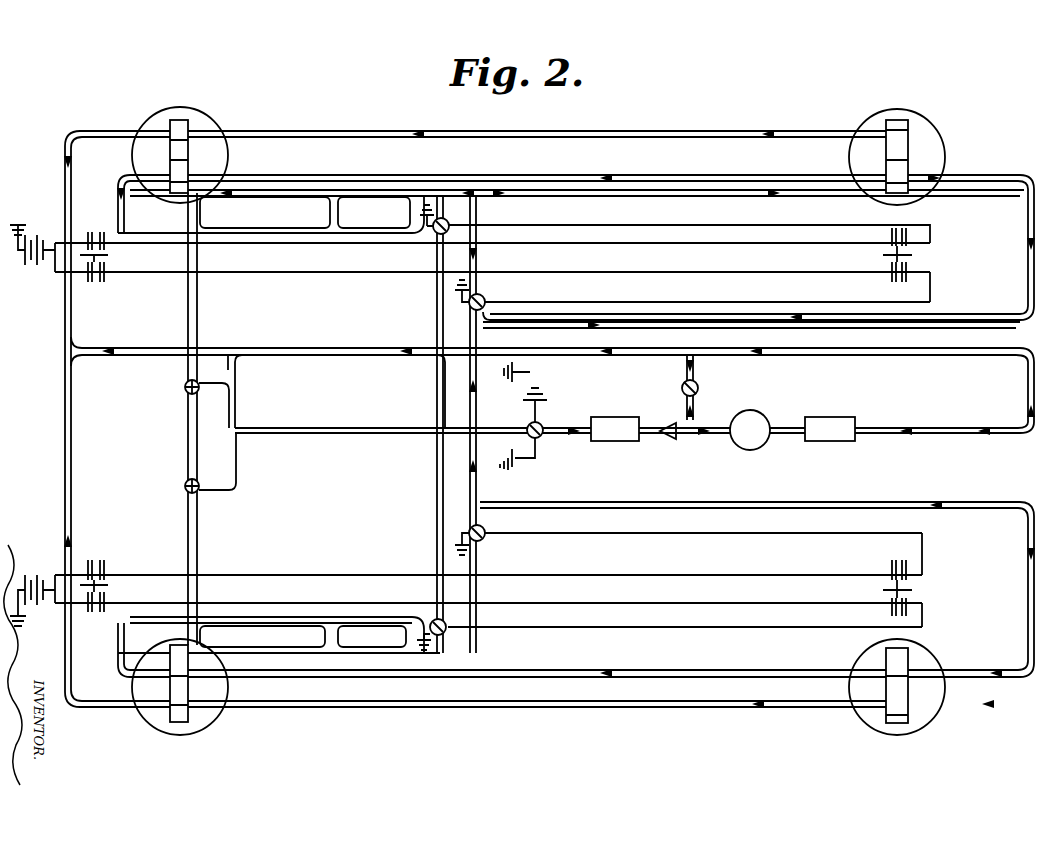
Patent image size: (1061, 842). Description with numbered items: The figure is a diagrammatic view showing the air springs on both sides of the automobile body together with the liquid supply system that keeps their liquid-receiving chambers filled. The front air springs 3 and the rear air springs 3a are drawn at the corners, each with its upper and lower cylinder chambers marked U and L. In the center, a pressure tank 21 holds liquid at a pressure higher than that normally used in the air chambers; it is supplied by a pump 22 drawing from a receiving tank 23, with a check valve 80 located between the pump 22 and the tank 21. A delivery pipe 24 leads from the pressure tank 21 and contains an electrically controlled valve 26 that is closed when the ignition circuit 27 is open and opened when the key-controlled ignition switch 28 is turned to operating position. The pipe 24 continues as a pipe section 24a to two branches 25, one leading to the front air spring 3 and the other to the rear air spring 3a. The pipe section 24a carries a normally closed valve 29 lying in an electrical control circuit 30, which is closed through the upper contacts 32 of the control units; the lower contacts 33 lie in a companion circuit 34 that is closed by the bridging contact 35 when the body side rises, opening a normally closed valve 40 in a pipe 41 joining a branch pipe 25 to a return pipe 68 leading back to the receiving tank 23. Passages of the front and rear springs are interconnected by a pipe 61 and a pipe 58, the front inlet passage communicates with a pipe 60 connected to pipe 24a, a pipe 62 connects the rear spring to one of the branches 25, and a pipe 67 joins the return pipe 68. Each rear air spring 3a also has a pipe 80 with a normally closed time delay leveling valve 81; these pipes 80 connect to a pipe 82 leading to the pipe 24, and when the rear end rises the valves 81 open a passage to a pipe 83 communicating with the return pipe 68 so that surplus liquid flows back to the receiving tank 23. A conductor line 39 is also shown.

The front air spring 3 is at (936, 136).
The rear air spring 3a is at (205, 115).
The pressure tank 21 is at (615, 418).
The pump 22 is at (754, 410).
The receiving tank 23 is at (836, 418).
The delivery pipe 24 is at (562, 424).
The pipe section 24a is at (486, 332).
The branch pipes 25 is at (284, 202).
The electrically controlled valve 26 is at (530, 424).
The ignition circuit 27 is at (534, 456).
The key-controlled ignition switch 28 is at (534, 398).
The electrically controlled valve 29 is at (484, 300).
The electrical control circuit 30 is at (644, 274).
The contacts 32 is at (102, 278).
The contacts 33 is at (102, 232).
The companion circuit 34 is at (724, 608).
The bridging contact 35 is at (110, 257).
The conductor line 39 is at (696, 232).
The electrically operated valve 40 is at (434, 232).
The pipe 41 is at (436, 298).
The pipe 58 is at (694, 128).
The pipe 60 is at (960, 322).
The pipe 61 is at (714, 174).
The pipe 62 is at (298, 233).
The pipe 67 is at (66, 200).
The return pipe 68 is at (292, 344).
The pipe 80 is at (197, 302).
The time delay leveling valve 81 is at (184, 388).
The pipe 82 is at (330, 428).
The pipe 83 is at (234, 410).